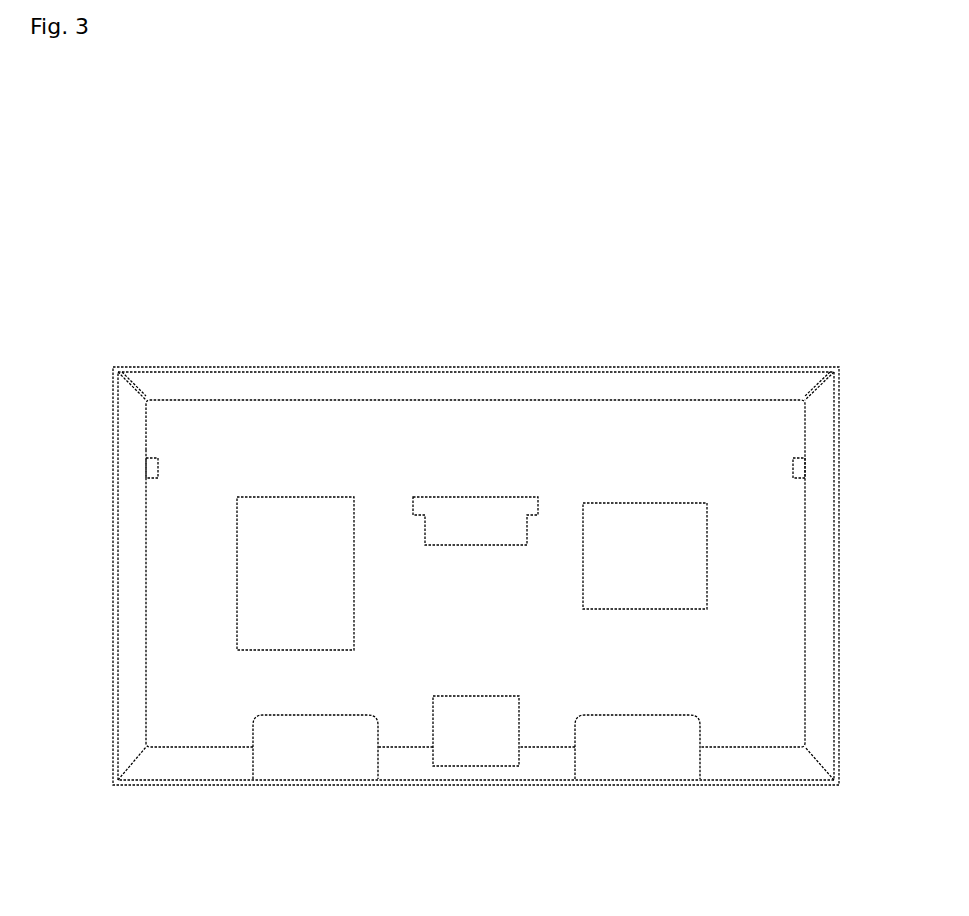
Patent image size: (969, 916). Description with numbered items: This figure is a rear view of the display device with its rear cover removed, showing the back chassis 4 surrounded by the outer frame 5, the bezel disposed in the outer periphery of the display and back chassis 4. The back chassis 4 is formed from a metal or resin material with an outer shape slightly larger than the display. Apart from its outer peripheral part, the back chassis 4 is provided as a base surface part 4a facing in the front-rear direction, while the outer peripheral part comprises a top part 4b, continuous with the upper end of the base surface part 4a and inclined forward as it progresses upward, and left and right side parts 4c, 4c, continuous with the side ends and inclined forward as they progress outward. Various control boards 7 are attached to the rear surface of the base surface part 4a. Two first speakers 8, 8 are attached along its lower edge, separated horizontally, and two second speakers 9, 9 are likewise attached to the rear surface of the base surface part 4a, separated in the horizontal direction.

The back chassis 4 is at (474, 527).
The base surface part 4a is at (585, 418).
The top part 4b is at (430, 384).
The side part 4c is at (131, 592).
The outer frame 5 is at (318, 367).
The control board 7 is at (270, 528).
The first speaker 8 is at (318, 762).
The second speaker 9 is at (158, 460).